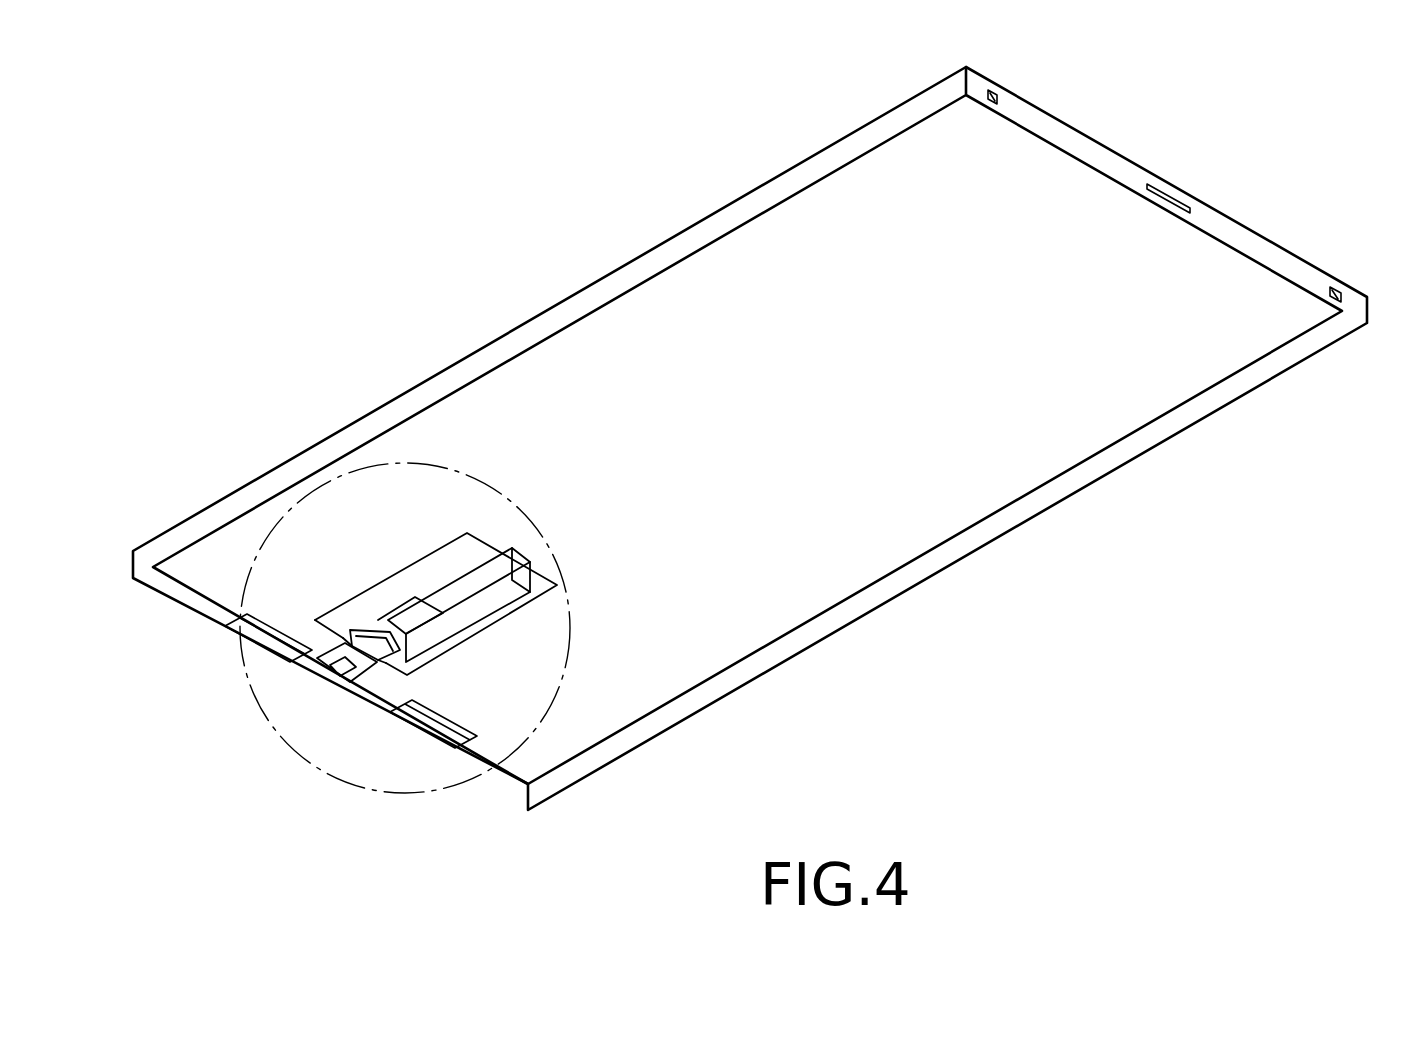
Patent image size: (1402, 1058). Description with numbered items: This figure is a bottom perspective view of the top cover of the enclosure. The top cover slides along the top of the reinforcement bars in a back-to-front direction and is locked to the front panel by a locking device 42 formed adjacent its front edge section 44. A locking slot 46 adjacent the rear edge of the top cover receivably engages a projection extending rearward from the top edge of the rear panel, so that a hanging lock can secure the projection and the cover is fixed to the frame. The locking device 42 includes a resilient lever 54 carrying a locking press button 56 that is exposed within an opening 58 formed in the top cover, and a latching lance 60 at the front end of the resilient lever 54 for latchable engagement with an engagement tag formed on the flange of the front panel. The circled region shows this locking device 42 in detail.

The locking device 42 is at (380, 569).
The front edge section 44 is at (190, 579).
The locking slot 46 is at (1165, 191).
The resilient lever 54 is at (500, 603).
The locking press button 56 is at (345, 627).
The opening 58 is at (380, 630).
The latching lance 60 is at (340, 668).